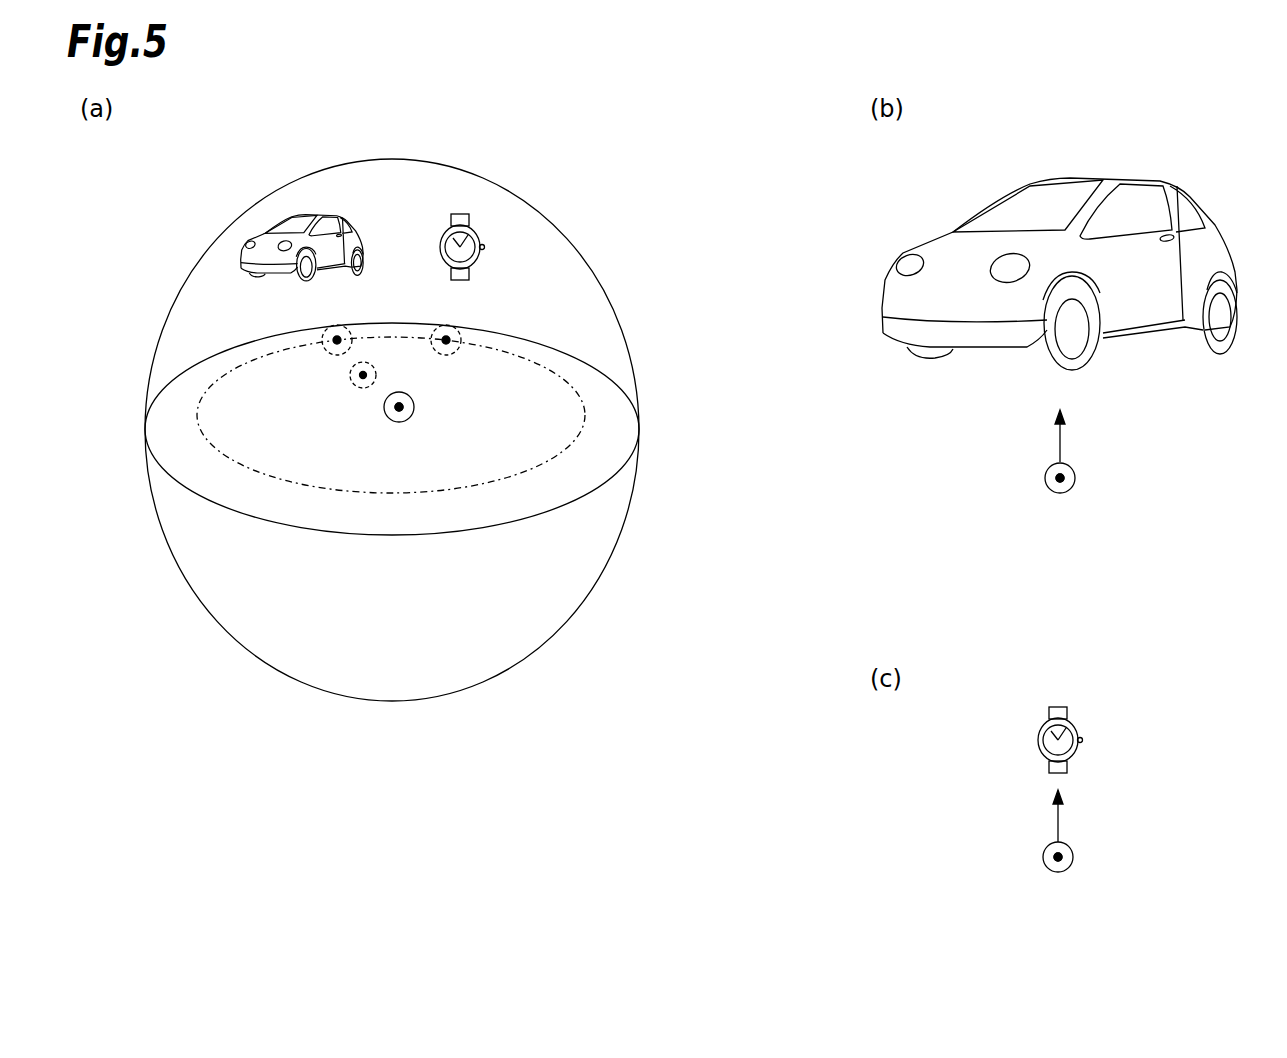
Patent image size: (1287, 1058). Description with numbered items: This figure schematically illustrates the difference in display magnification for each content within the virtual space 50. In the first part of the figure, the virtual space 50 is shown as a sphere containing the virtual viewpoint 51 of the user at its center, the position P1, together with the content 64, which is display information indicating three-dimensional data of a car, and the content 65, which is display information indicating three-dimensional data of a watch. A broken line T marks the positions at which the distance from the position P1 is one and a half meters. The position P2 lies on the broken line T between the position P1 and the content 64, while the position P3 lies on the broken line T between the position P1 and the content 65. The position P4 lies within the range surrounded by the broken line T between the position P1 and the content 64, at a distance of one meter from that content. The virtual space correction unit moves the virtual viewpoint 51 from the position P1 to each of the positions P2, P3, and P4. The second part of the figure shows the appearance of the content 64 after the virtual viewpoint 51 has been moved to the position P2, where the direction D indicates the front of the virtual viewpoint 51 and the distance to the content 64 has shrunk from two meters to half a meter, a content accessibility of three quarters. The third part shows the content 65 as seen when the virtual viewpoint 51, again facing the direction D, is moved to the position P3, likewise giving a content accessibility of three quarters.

The virtual space 50 is at (250, 653).
The virtual viewpoint 51 is at (400, 402).
The content 64 is at (312, 213).
The content 65 is at (462, 212).
The broken line T is at (197, 437).
The direction D is at (1063, 440).
The position P1 is at (415, 407).
The position P2 is at (337, 333).
The position P3 is at (447, 335).
The position P4 is at (362, 373).